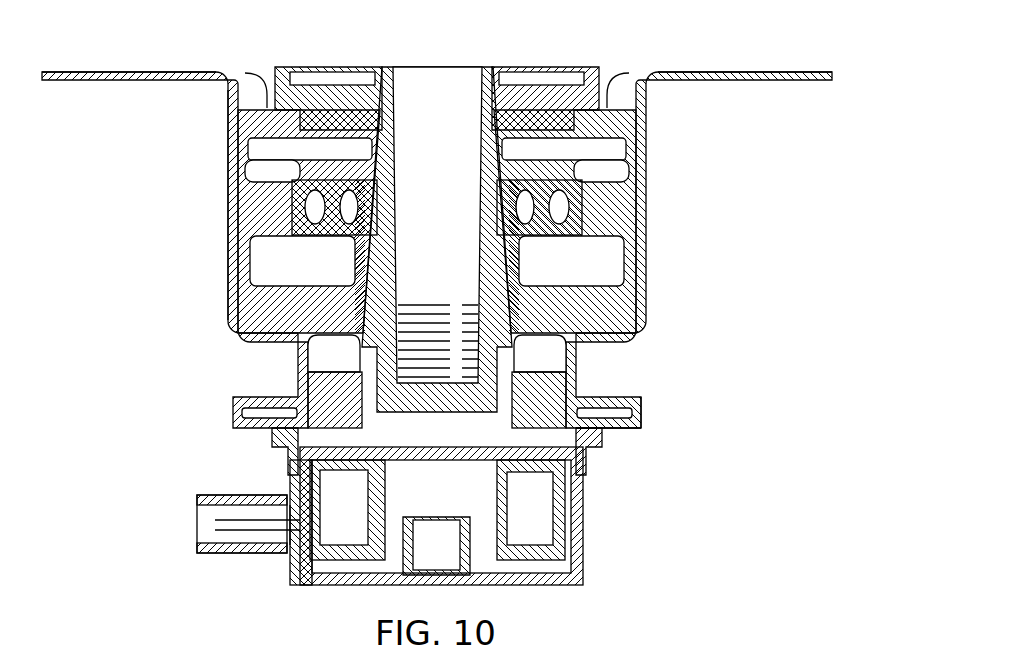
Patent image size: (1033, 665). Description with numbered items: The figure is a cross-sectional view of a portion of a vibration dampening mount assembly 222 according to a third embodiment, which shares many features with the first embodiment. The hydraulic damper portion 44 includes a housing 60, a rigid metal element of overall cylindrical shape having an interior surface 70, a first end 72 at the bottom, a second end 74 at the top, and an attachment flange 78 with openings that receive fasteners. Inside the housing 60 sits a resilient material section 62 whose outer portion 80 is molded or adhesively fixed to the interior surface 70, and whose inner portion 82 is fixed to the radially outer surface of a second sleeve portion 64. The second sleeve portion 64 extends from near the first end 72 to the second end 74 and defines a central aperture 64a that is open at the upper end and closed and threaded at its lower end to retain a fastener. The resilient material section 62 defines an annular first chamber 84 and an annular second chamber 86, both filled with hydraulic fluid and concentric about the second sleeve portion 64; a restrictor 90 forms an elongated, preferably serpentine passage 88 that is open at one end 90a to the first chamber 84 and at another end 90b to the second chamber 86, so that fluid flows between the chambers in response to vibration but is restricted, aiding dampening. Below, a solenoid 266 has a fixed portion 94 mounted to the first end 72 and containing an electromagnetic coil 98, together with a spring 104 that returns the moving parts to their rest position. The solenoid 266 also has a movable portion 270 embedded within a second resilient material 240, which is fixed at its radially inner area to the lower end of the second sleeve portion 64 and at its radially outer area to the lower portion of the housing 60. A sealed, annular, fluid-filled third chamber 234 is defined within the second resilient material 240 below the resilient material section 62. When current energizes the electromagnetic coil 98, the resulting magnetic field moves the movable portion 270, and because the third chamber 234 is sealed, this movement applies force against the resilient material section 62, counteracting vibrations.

The vibration dampening mount assembly 222 is at (703, 26).
The attachment flange 78 is at (67, 82).
The second end 74 is at (647, 93).
The housing 60 is at (646, 193).
The hydraulic damper portion 44 is at (222, 257).
The resilient material section 62 is at (262, 200).
The first chamber 84 is at (610, 170).
The outer portion 80 is at (245, 225).
The second chamber 86 is at (600, 240).
The interior surface 70 is at (646, 276).
The inner portion 82 is at (380, 194).
The passage 88 is at (515, 166).
The restrictor 90 is at (537, 225).
The one end of the passage 90a is at (300, 160).
The another end of the passage 90b is at (548, 215).
The second sleeve portion 64 is at (385, 262).
The central aperture 64a is at (490, 128).
The second resilient material 240 is at (510, 291).
The third chamber 234 is at (335, 360).
The movable portion 270 is at (335, 398).
The first end 72 is at (622, 432).
The solenoid 266 is at (596, 490).
The spring 104 is at (365, 530).
The electromagnetic coil 98 is at (530, 518).
The fixed portion 94 is at (278, 473).